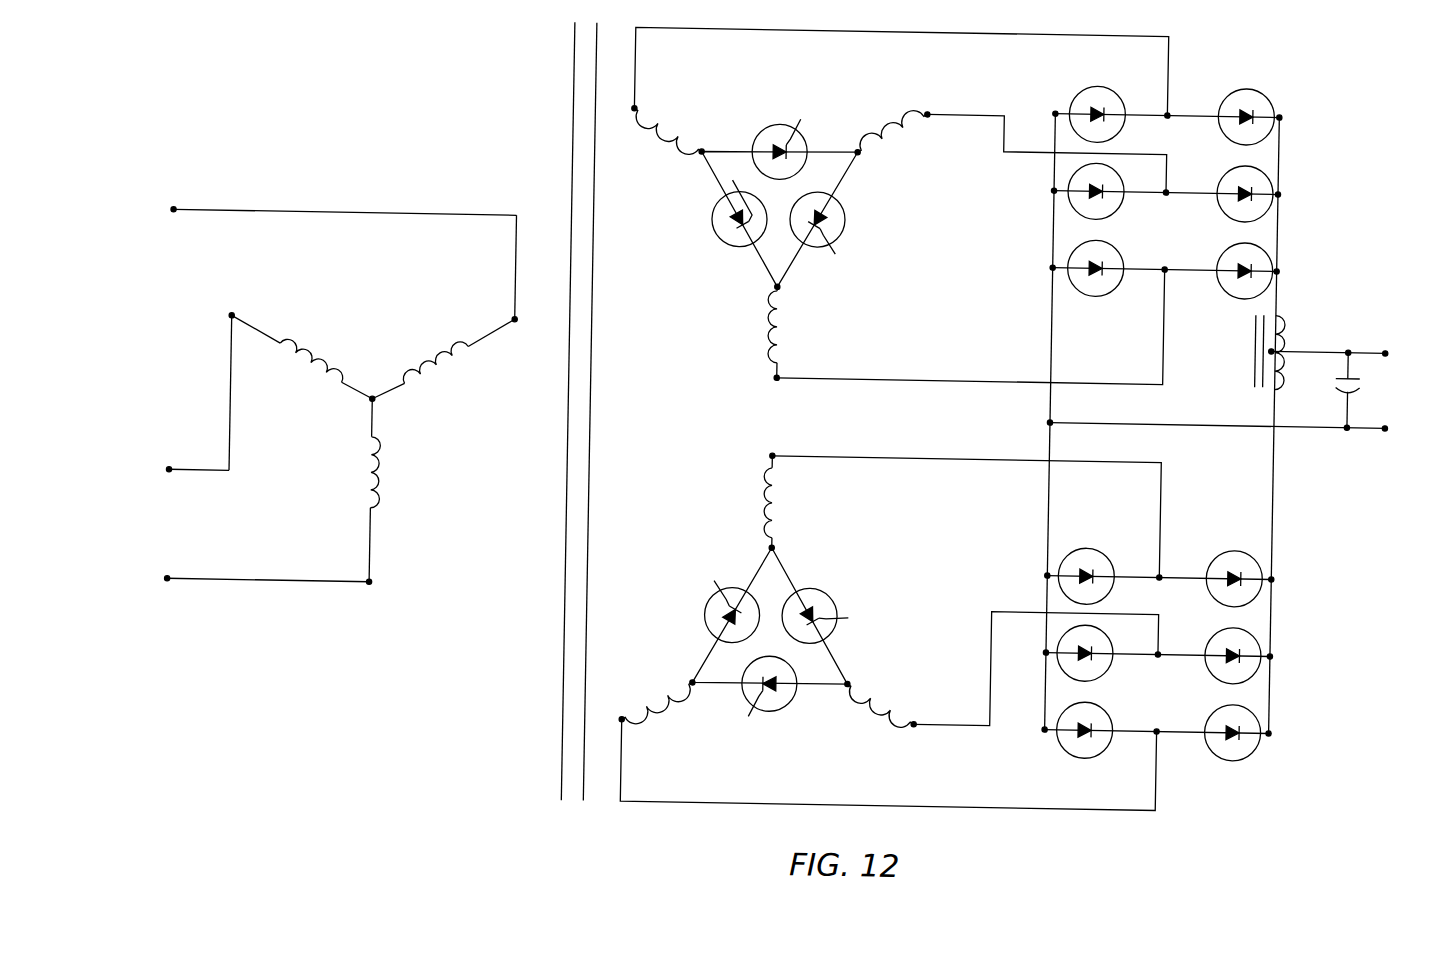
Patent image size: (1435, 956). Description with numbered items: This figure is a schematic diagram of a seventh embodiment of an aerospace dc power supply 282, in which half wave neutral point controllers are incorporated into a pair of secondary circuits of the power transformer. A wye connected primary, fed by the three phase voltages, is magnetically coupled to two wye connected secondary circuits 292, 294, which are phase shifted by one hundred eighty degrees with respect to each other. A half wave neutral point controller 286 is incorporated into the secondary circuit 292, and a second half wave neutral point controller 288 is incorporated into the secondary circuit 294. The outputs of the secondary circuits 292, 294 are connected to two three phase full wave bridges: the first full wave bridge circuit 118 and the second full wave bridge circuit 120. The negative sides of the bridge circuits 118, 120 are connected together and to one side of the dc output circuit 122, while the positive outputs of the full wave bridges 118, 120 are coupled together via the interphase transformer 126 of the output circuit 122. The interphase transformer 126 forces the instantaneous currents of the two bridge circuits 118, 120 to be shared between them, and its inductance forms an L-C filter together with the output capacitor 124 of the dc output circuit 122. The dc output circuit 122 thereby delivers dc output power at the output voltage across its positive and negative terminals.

The first full wave bridge circuit 118 is at (1227, 72).
The second full wave bridge circuit 120 is at (1238, 790).
The dc output circuit 122 is at (1335, 322).
The output capacitor 124 is at (1346, 388).
The interphase transformer 126 is at (1249, 350).
The aerospace dc power supply 282 is at (390, 719).
The half wave neutral point controller 286 is at (801, 89).
The half wave neutral point controller 288 is at (845, 586).
The secondary circuit 292 is at (654, 178).
The secondary circuit 294 is at (752, 524).